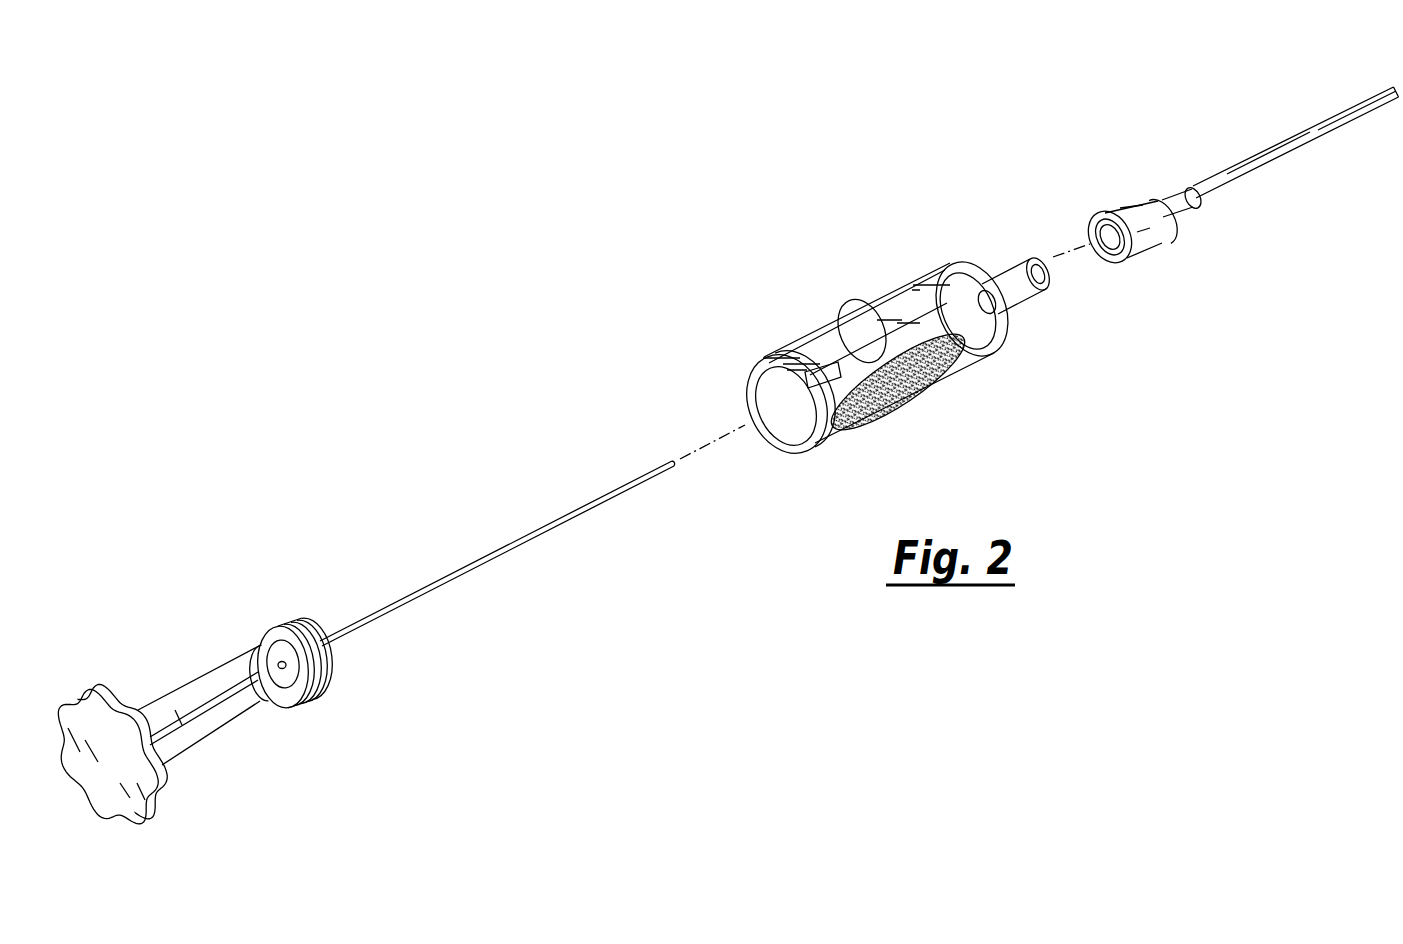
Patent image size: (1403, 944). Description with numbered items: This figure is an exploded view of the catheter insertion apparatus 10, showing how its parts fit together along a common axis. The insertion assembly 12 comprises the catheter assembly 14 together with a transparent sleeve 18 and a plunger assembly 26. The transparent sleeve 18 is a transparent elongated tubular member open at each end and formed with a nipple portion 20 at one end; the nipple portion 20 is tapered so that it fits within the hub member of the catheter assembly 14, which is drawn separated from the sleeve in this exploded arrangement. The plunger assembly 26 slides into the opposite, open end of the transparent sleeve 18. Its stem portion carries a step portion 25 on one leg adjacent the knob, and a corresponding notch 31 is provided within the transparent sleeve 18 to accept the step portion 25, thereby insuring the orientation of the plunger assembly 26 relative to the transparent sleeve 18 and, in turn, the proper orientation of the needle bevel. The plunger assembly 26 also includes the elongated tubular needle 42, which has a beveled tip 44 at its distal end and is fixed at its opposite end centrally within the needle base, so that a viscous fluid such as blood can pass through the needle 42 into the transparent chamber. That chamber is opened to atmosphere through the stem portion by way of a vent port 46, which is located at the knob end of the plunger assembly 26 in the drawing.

The catheter insertion apparatus 10 is at (573, 172).
The insertion assembly 12 is at (924, 320).
The catheter assembly 14 is at (1215, 148).
The transparent sleeve 18 is at (920, 292).
The nipple portion 20 is at (1025, 287).
The step portion 25 is at (167, 712).
The plunger assembly 26 is at (237, 706).
The notch 31 is at (843, 312).
The elongated tubular needle 42 is at (497, 558).
The beveled tip 44 is at (675, 460).
The vent port 46 is at (103, 762).